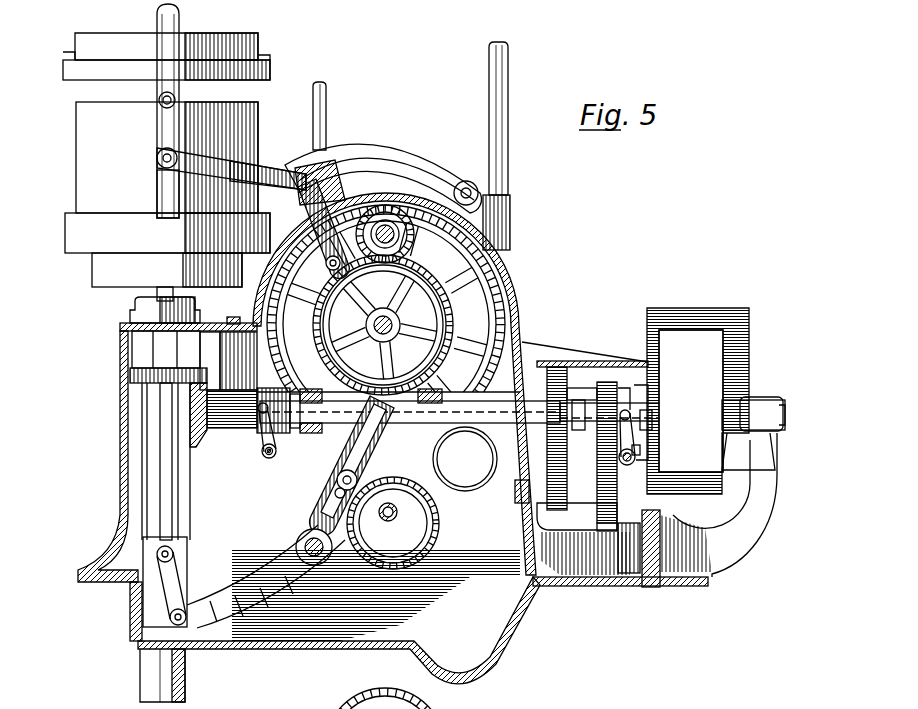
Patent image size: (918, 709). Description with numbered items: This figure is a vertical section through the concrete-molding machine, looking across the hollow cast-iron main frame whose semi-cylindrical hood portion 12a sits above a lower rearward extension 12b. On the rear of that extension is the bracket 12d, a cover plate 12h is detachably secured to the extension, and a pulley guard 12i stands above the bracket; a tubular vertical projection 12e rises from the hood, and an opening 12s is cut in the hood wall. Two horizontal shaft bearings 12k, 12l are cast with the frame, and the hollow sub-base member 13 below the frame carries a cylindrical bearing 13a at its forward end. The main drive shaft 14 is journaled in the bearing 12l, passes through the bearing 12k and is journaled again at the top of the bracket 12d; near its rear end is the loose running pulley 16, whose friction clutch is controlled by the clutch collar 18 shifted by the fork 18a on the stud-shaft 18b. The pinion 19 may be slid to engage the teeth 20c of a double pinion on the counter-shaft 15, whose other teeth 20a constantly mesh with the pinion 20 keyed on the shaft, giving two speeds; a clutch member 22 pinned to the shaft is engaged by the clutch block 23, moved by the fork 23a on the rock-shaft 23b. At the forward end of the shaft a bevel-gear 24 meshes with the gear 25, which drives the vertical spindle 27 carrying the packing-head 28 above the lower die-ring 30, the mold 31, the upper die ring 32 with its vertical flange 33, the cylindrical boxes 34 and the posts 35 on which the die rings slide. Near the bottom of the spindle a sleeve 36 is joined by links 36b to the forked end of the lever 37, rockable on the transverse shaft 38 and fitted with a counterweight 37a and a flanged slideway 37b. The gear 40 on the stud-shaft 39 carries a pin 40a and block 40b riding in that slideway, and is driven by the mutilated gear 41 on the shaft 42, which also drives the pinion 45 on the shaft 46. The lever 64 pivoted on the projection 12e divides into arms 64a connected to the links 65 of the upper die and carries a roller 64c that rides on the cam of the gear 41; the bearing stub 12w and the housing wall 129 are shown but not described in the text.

The semi-cylindrical hood portion 12a is at (521, 300).
The lower rearward extension 12b is at (640, 588).
The bracket 12d is at (722, 563).
The tubular vertical projection 12e is at (510, 217).
The cover plate 12h is at (575, 363).
The pulley guard 12i is at (742, 333).
The horizontal shaft bearing 12k is at (506, 435).
The horizontal shaft bearing 12l is at (235, 430).
The opening 12s is at (332, 192).
The bearing stub 12w is at (762, 398).
The sub-base member 13 is at (502, 655).
The cylindrical bearing 13a is at (148, 676).
The main drive shaft 14 is at (786, 415).
The counter-shaft 15 is at (514, 490).
The loose running pulley 16 is at (691, 401).
The clutch collar 18 is at (648, 388).
The fork 18a is at (652, 419).
The stud-shaft 18b is at (640, 452).
The pinion 19 is at (612, 382).
The pinion 20 is at (554, 366).
The teeth of double pinion 20a is at (558, 508).
The teeth of double pinion 20c is at (605, 530).
The friction clutch member 22 is at (305, 428).
The clutch block 23 is at (280, 432).
The fork 23a is at (245, 462).
The rock-shaft 23b is at (270, 460).
The bevel-gear 24 is at (205, 442).
The gear 25 is at (128, 376).
The vertical spindle 27 is at (173, 518).
The packing-head 28 is at (105, 277).
The lower die-ring 30 is at (70, 238).
The mold 31 is at (83, 175).
The upper die ring 32 is at (270, 70).
The vertical flange 33 is at (260, 43).
The vertical cylindrical box 34 is at (181, 22).
The post 35 is at (160, 197).
The sleeve 36 is at (185, 562).
The links 36b is at (178, 588).
The lever 37 is at (266, 576).
The counterweight 37a is at (465, 459).
The flanged slideway 37b is at (378, 452).
The shaft 38 is at (300, 545).
The stud-shaft 39 is at (381, 523).
The gear 40 is at (393, 523).
The pin 40a is at (357, 477).
The block 40b is at (337, 483).
The mutilated gear 41 is at (442, 332).
The shaft 42 is at (383, 325).
The pinion 45 is at (410, 251).
The shaft 46 is at (389, 230).
The lever 64 is at (421, 158).
The arms 64a is at (290, 165).
The roller 64c is at (315, 207).
The links 65 is at (157, 140).
The housing wall 129 is at (120, 424).